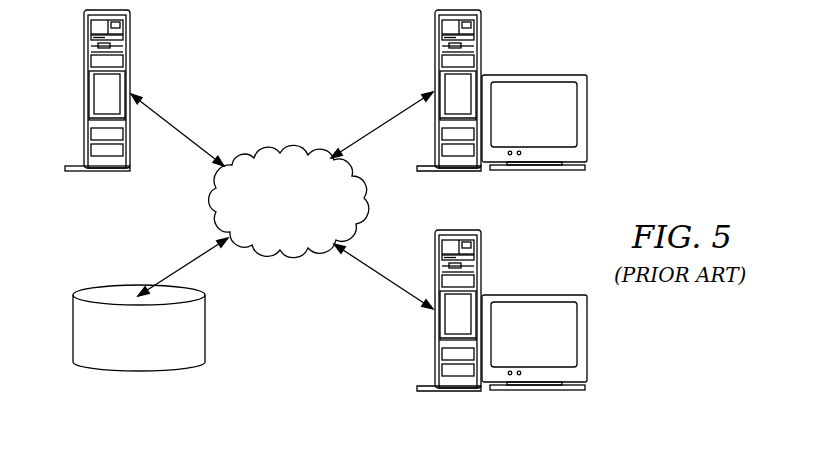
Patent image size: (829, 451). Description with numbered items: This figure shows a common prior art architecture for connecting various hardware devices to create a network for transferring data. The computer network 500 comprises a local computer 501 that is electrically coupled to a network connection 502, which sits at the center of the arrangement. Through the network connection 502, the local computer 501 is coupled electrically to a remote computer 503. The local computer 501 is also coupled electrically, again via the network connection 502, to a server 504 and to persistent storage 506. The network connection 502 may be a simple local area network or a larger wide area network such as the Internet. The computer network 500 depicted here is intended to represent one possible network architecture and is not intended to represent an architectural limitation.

The computer network 500 is at (644, 132).
The local computer 501 is at (535, 74).
The network connection 502 is at (308, 216).
The remote computer 503 is at (535, 294).
The server 504 is at (84, 93).
The persistent storage 506 is at (158, 353).